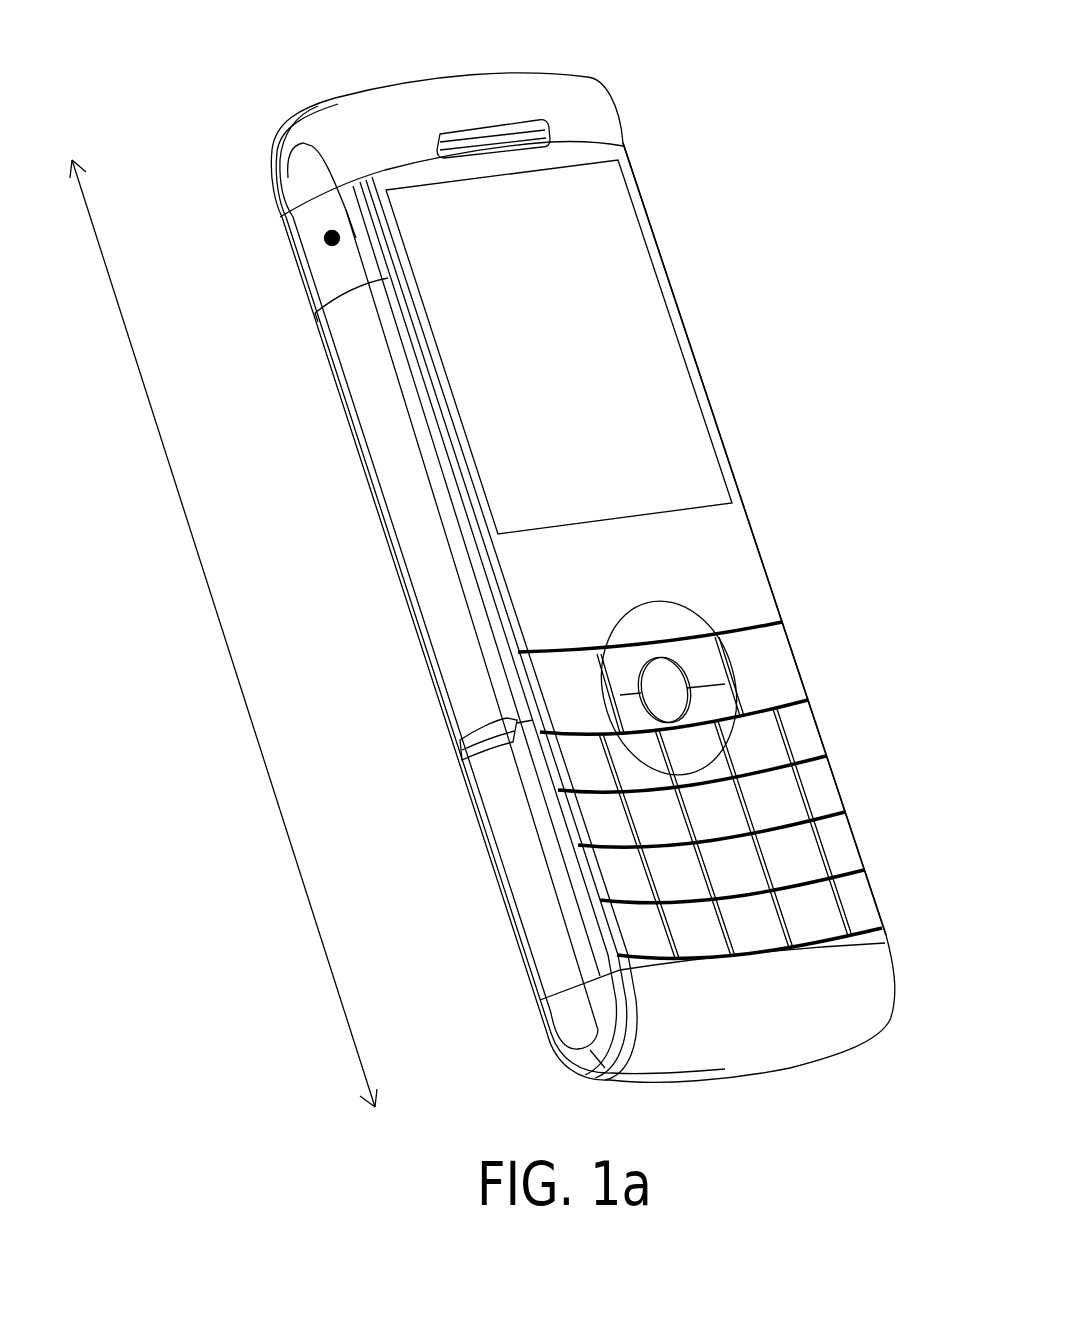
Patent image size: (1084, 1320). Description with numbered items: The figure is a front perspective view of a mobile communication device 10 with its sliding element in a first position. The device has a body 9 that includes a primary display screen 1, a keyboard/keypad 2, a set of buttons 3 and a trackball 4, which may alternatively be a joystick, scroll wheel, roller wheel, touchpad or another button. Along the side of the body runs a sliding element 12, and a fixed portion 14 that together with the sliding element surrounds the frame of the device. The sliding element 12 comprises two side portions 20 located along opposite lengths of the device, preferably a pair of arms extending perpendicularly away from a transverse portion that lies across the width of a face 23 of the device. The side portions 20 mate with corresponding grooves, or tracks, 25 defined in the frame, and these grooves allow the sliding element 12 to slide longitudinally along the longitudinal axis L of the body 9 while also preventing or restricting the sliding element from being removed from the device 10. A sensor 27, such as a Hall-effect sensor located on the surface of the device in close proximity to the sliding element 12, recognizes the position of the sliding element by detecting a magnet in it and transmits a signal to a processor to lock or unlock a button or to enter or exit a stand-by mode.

The mobile communication device 10 is at (727, 190).
The primary display screen 1 is at (559, 347).
The keyboard/keypad 2 is at (790, 848).
The set of buttons 3 is at (673, 627).
The trackball 4 is at (697, 660).
The body 9 is at (703, 360).
The sliding element 12 is at (382, 427).
The fixed portion 14 is at (515, 840).
The side portions 20 is at (412, 524).
The face 23 is at (680, 538).
The grooves 25 is at (358, 198).
The sensor 27 is at (322, 238).
The longitudinal axis L is at (223, 633).